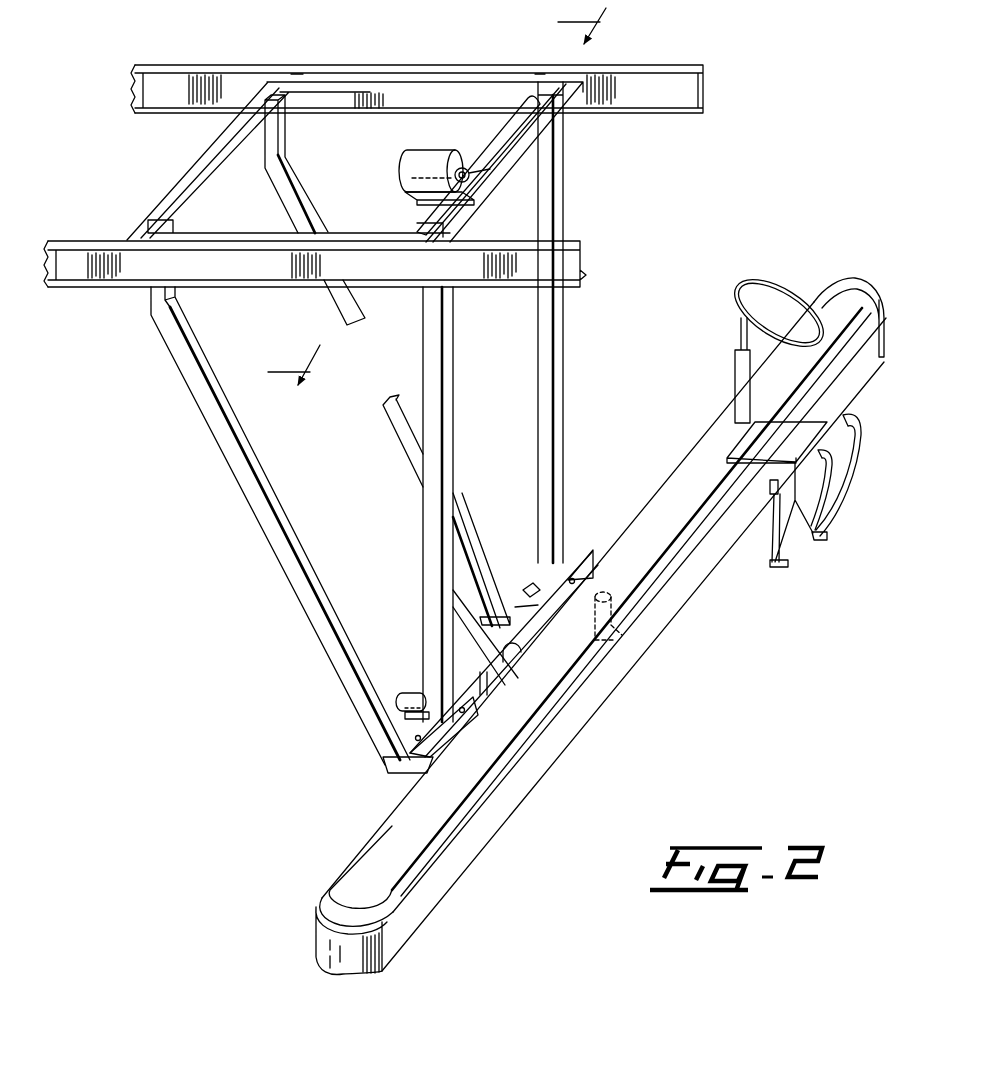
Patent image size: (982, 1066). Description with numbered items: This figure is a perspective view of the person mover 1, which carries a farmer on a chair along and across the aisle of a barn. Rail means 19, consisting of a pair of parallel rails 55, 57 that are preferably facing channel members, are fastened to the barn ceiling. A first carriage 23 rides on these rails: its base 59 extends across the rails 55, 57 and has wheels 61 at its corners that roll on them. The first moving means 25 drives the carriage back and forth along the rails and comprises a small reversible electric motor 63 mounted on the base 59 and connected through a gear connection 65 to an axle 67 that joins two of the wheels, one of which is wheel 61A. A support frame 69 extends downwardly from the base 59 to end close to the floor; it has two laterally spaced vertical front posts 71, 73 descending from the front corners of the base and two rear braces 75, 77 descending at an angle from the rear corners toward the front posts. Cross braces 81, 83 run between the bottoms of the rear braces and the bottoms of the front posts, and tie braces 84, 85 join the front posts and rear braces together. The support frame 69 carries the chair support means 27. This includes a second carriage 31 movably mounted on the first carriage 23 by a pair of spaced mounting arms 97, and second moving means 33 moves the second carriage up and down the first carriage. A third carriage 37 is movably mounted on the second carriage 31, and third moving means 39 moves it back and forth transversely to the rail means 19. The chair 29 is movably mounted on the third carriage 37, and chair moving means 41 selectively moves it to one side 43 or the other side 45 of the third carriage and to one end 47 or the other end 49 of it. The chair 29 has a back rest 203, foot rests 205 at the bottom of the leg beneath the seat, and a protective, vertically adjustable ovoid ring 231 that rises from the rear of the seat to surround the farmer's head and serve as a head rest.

The person mover 1 is at (466, 491).
The rail means 19 is at (404, 151).
The first carriage 23 is at (416, 407).
The first moving means 25 is at (481, 163).
The chair support means 27 is at (557, 594).
The chair 29 is at (760, 431).
The second carriage 31 is at (522, 578).
The second moving means 33 is at (398, 697).
The third carriage 37 is at (458, 893).
The third moving means 39 is at (622, 632).
The chair moving means 41 is at (525, 650).
The one side of third carriage 43 is at (338, 875).
The other side of third carriage 45 is at (462, 805).
The one end of third carriage 47 is at (316, 930).
The other end of third carriage 49 is at (852, 278).
The rail 55 is at (572, 241).
The rail 57 is at (700, 64).
The base 59 is at (195, 165).
The wheels 61 is at (297, 74).
The wheel 61A is at (540, 74).
The electric motor 63 is at (406, 178).
The gear connection 65 is at (472, 178).
The axle 67 is at (497, 140).
The support frame 69 is at (204, 430).
The front post 71 is at (455, 390).
The front post 73 is at (566, 334).
The rear brace 75 is at (272, 550).
The rear brace 77 is at (395, 442).
The cross brace 81 is at (492, 688).
The cross brace 83 is at (478, 648).
The tie brace 84 is at (403, 777).
The tie brace 85 is at (508, 600).
The mounting arms 97 is at (410, 746).
The back rest 203 is at (727, 455).
The foot rests 205 is at (812, 540).
The ring 231 is at (776, 289).